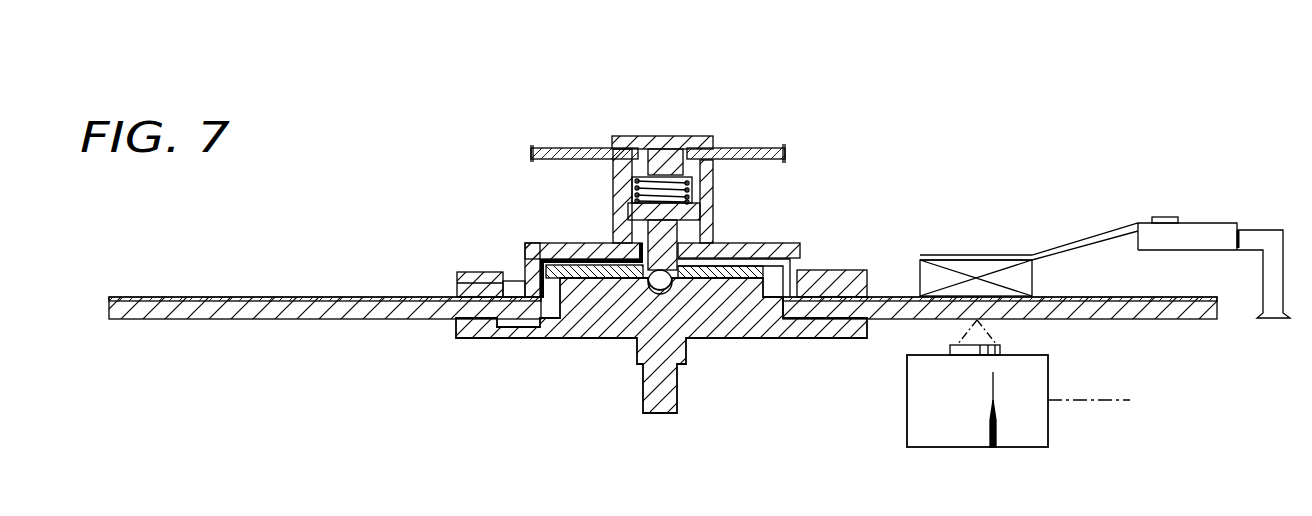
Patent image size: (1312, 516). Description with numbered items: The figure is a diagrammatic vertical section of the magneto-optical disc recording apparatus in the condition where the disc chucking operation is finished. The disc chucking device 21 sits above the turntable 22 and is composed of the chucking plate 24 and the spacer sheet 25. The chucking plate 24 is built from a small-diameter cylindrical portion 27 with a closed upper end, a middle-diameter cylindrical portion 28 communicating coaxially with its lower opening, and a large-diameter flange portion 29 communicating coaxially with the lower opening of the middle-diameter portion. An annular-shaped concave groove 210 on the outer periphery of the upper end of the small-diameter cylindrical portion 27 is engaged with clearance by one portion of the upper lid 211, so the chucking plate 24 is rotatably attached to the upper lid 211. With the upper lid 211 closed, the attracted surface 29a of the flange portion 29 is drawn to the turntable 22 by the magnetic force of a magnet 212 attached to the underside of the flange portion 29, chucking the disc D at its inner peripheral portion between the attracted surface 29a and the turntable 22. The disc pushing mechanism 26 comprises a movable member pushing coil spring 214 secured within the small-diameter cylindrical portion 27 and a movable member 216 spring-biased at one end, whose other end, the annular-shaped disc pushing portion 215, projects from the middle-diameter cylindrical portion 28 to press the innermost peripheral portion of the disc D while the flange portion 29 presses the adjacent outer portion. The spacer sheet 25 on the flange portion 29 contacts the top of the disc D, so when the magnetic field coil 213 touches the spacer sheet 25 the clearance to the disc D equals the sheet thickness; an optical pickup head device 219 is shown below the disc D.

The disc chucking device 21 is at (485, 141).
The turntable 22 is at (590, 320).
The chucking plate 24 is at (466, 246).
The spacer sheet 25 is at (247, 297).
The disc pushing mechanism 26 is at (854, 153).
The small-diameter cylindrical portion 27 is at (613, 190).
The middle-diameter cylindrical portion 28 is at (570, 247).
The large-diameter flange portion 29 is at (540, 270).
The attracted surface 29a is at (505, 290).
The annular-shaped concave groove 210 is at (648, 137).
The upper lid 211 is at (565, 147).
The magnet 212 is at (460, 295).
The magnetic field coil 213 is at (970, 262).
The movable member pushing coil spring 214 is at (700, 190).
The annular-shaped disc pushing portion 215 is at (805, 270).
The movable member 216 is at (742, 262).
The optical pickup head device 219 is at (1048, 423).
The disc D is at (245, 320).